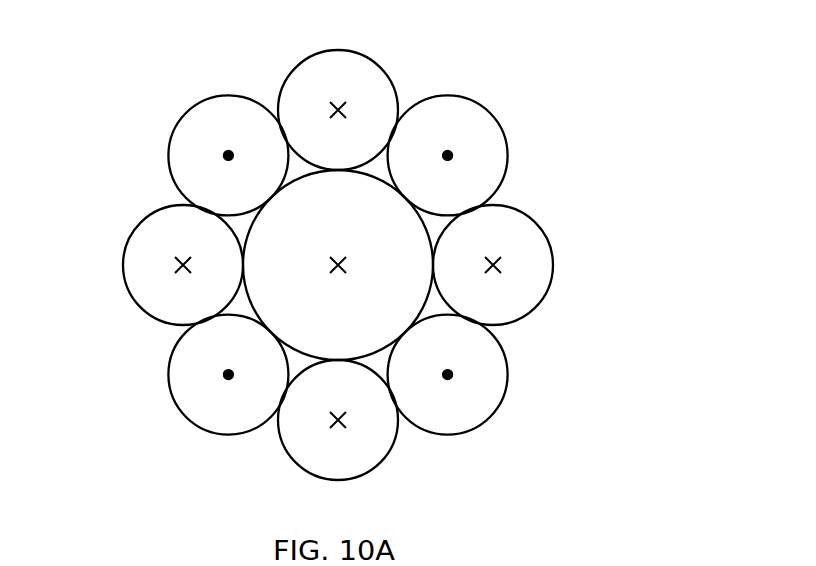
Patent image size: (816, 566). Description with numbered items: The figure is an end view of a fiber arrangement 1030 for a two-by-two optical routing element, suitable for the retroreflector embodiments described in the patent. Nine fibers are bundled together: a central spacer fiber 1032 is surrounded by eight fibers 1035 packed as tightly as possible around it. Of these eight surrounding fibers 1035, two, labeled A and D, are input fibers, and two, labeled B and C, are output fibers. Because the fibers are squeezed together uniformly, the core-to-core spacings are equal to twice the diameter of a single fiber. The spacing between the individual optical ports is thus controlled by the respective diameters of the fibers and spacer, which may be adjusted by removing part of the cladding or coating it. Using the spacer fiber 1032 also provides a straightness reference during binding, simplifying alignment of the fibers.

The arrangement 1030 is at (630, 162).
The spacer fiber 1032 is at (334, 269).
The fibers 1035 is at (235, 93).
The input fiber A is at (450, 152).
The output fiber B is at (449, 378).
The output fiber C is at (226, 152).
The input fiber D is at (226, 378).